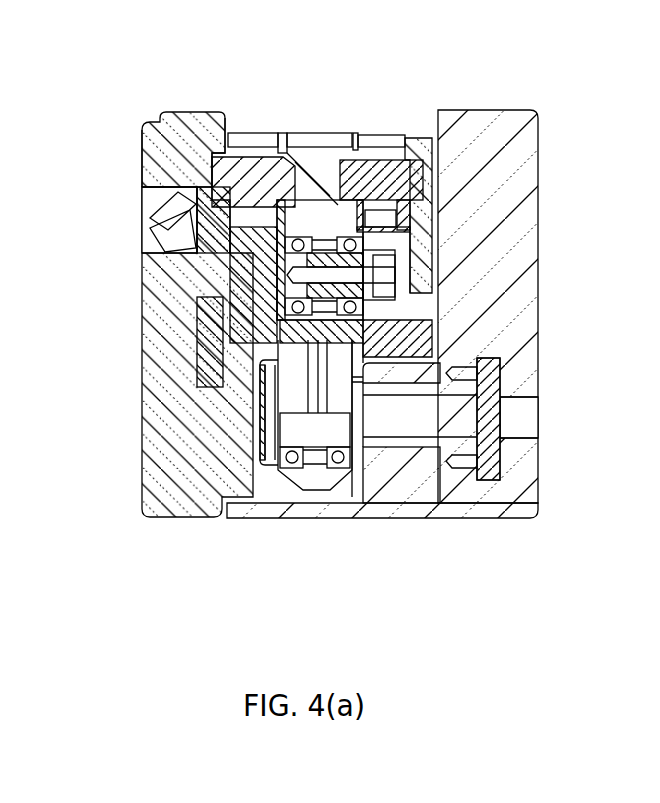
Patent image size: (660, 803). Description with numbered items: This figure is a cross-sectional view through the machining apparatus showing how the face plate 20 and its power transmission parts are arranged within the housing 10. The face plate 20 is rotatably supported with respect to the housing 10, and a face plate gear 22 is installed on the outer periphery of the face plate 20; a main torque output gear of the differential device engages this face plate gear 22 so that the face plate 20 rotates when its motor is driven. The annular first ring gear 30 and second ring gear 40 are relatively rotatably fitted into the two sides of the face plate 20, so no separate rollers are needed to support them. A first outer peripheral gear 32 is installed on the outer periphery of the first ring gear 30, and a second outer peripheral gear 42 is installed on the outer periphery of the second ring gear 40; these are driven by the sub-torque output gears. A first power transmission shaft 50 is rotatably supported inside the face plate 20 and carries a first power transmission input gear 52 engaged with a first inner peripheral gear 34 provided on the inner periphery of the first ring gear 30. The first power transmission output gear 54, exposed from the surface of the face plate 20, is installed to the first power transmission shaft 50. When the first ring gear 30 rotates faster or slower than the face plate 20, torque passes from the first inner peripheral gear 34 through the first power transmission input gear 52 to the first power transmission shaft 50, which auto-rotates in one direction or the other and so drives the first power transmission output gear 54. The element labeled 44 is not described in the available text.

The housing 10 is at (448, 503).
The face plate 20 is at (305, 150).
The face plate gear 22 is at (328, 133).
The first ring gear 30 is at (160, 158).
The first outer peripheral gear 32 is at (257, 133).
The first inner peripheral gear 34 is at (215, 205).
The second ring gear 40 is at (370, 160).
The second outer peripheral gear 42 is at (400, 138).
The nut 44 is at (388, 221).
The first power transmission shaft 50 is at (230, 270).
The first power transmission input gear 52 is at (245, 320).
The first power transmission output gear 54 is at (197, 310).